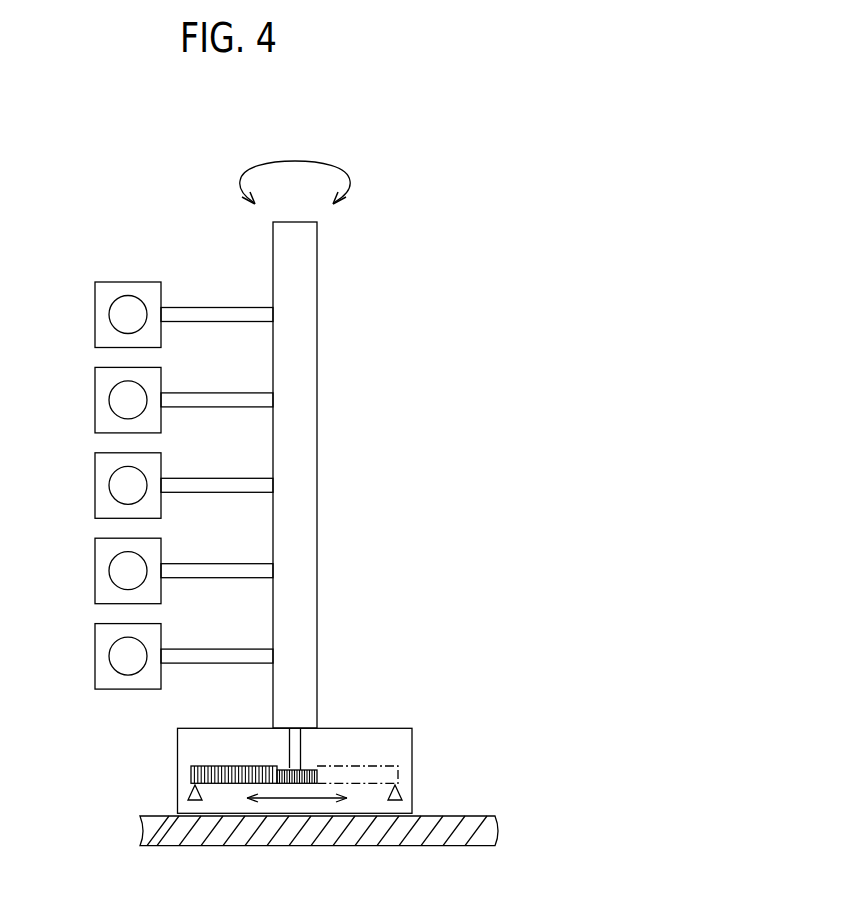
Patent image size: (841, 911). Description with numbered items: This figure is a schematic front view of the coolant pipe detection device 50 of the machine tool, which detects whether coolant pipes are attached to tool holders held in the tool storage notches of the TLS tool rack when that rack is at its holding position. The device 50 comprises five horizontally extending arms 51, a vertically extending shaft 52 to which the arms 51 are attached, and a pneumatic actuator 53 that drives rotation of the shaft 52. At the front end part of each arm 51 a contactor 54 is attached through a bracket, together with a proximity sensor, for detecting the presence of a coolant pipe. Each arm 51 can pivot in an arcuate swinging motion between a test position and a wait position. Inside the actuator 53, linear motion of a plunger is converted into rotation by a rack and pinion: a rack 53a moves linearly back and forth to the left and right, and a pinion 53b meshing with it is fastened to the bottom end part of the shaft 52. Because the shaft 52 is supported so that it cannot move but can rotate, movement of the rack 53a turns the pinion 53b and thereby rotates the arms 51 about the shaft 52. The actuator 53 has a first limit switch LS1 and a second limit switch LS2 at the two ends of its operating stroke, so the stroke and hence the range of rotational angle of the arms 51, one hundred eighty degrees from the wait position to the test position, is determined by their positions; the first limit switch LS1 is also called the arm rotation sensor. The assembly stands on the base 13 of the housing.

The coolant pipe detection device 50 is at (400, 199).
The arm 51 is at (217, 305).
The shaft 52 is at (305, 312).
The pneumatic actuator 53 is at (363, 737).
The rack 53a is at (242, 787).
The pinion 53b is at (302, 785).
The contactor 54 is at (122, 312).
The base 13 is at (465, 815).
The first limit switch LS1 is at (194, 801).
The second limit switch LS2 is at (395, 801).